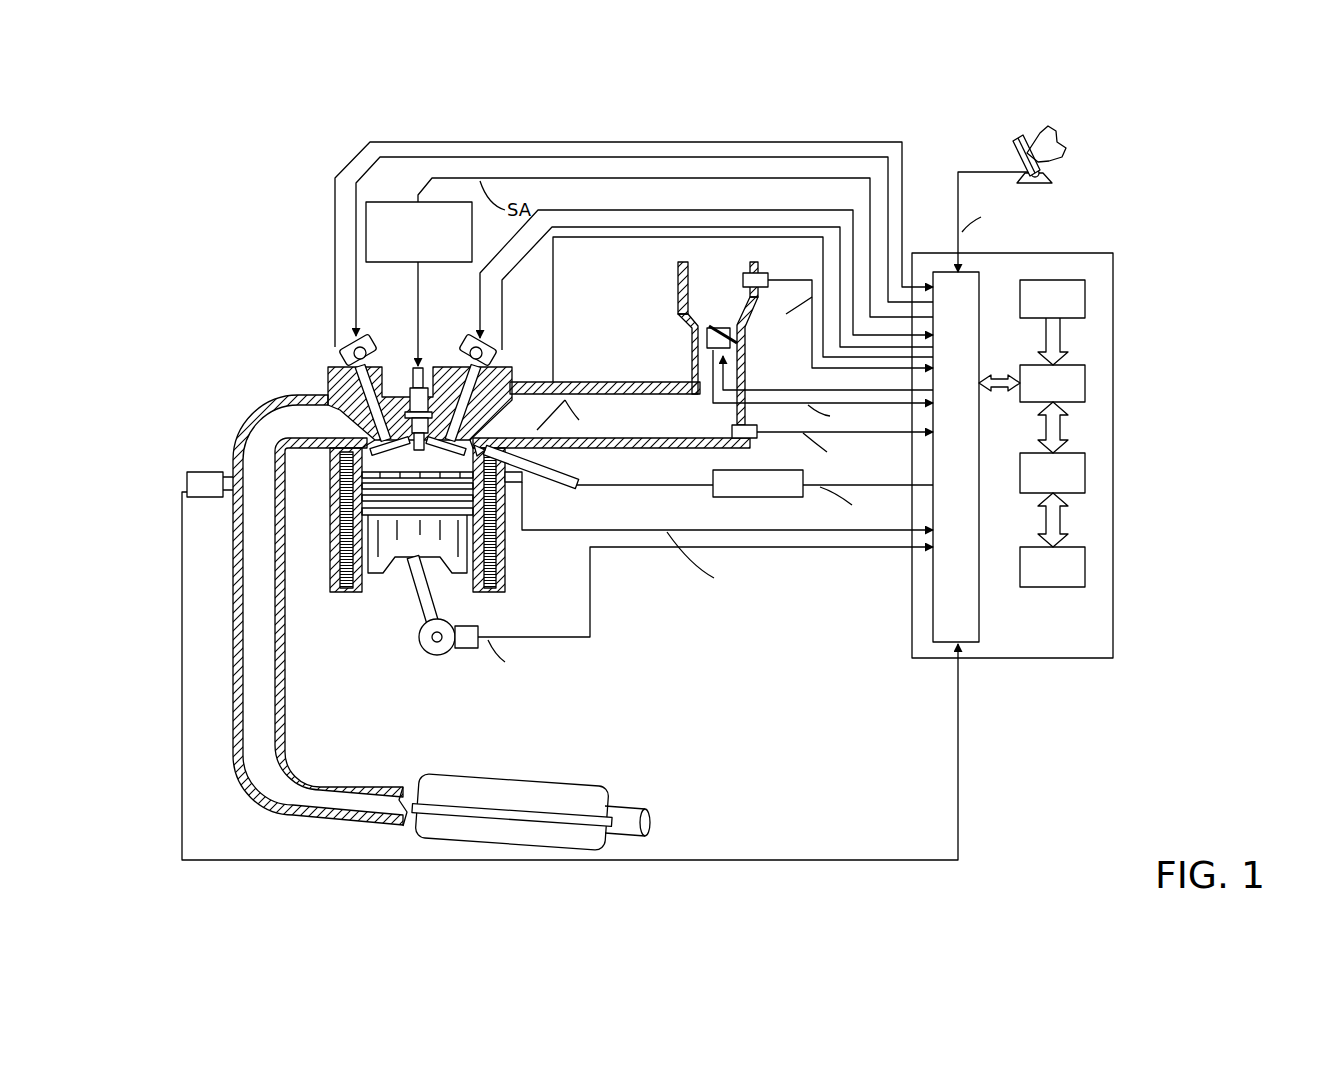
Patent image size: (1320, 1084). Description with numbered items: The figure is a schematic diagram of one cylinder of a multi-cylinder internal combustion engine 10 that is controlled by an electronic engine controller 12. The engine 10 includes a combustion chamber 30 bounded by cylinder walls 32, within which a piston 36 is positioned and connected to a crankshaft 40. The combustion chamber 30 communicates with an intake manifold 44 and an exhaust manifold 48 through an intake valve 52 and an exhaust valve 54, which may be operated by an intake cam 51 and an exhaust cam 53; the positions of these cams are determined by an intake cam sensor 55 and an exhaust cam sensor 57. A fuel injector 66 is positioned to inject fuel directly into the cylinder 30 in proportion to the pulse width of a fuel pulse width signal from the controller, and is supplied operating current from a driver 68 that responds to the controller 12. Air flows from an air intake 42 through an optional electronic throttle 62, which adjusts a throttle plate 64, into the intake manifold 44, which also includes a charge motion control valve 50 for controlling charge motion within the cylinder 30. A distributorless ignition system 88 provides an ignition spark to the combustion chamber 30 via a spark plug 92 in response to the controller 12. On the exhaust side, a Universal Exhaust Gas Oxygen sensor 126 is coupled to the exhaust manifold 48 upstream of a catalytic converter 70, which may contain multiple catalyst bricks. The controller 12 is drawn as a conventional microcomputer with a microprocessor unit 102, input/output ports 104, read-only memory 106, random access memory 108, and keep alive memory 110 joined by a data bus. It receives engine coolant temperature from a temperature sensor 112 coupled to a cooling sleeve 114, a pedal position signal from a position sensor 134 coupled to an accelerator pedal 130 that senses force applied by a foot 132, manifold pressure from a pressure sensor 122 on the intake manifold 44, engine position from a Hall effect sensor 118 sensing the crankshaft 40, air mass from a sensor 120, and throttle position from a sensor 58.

The internal combustion engine 10 is at (270, 325).
The electronic engine controller 12 is at (1113, 253).
The combustion chamber 30 is at (410, 465).
The cylinder walls 32 is at (368, 580).
The piston 36 is at (403, 550).
The crankshaft 40 is at (428, 653).
The air intake 42 is at (731, 303).
The intake manifold 44 is at (673, 428).
The exhaust manifold 48 is at (311, 431).
The charge motion control valve 50 is at (569, 415).
The intake cam 51 is at (467, 337).
The intake valve 52 is at (470, 431).
The exhaust cam 53 is at (368, 337).
The exhaust valve 54 is at (380, 437).
The intake cam sensor 55 is at (485, 356).
The exhaust cam sensor 57 is at (343, 358).
The throttle position sensor 58 is at (700, 352).
The electronic throttle 62 is at (745, 336).
The throttle plate 64 is at (700, 331).
The fuel injector 66 is at (518, 468).
The driver 68 is at (735, 498).
The catalytic converter 70 is at (437, 773).
The distributorless ignition system 88 is at (380, 202).
The spark plug 92 is at (428, 360).
The microprocessor unit 102 is at (1087, 378).
The input/output ports 104 is at (980, 283).
The read-only memory 106 is at (1086, 297).
The random access memory 108 is at (1087, 468).
The keep alive memory 110 is at (1087, 562).
The temperature sensor 112 is at (522, 482).
The cooling sleeve 114 is at (502, 545).
The Hall effect sensor 118 is at (460, 650).
The air mass sensor 120 is at (760, 273).
The pressure sensor 122 is at (755, 438).
The Universal Exhaust Gas Oxygen (UEGO) sensor 126 is at (187, 476).
The accelerator pedal 130 is at (1015, 150).
The foot 132 is at (1063, 133).
The position sensor 134 is at (1043, 172).